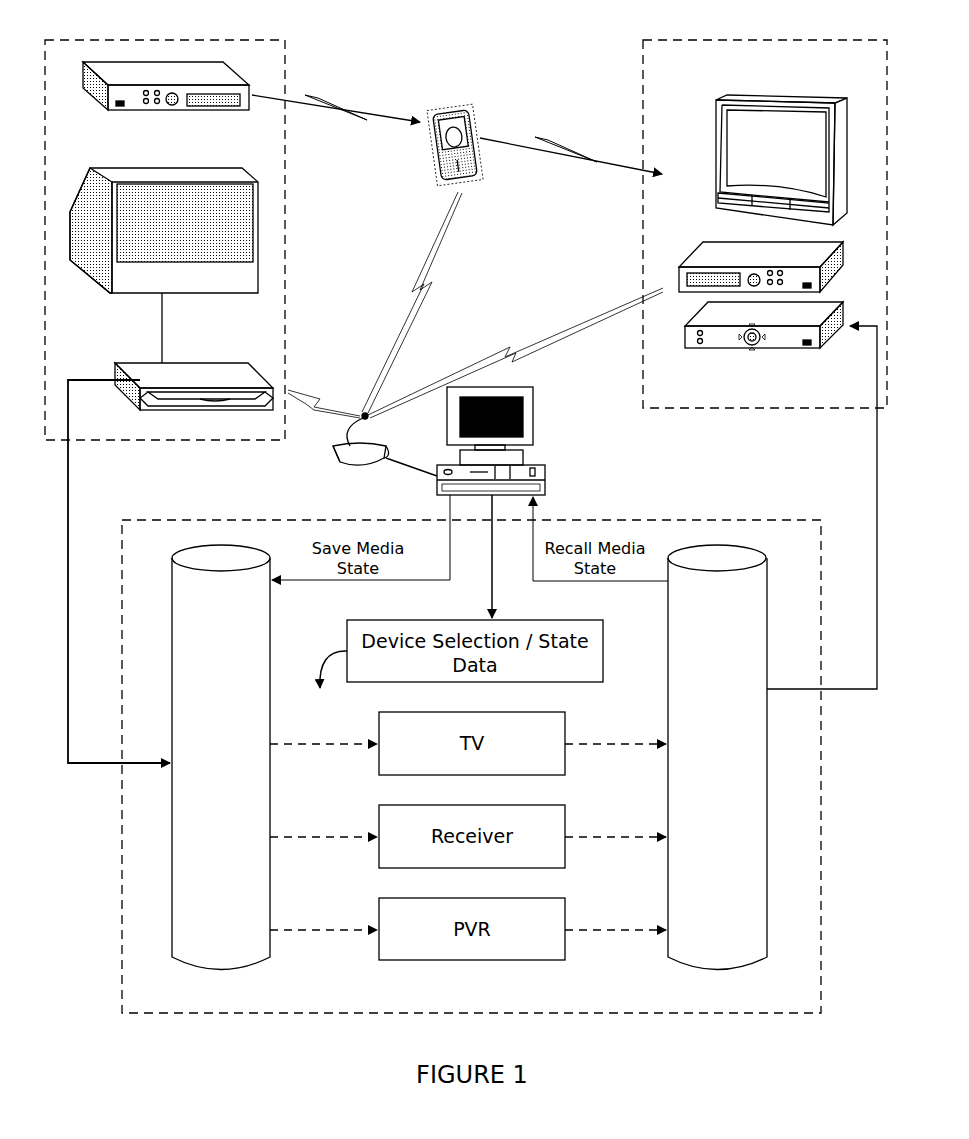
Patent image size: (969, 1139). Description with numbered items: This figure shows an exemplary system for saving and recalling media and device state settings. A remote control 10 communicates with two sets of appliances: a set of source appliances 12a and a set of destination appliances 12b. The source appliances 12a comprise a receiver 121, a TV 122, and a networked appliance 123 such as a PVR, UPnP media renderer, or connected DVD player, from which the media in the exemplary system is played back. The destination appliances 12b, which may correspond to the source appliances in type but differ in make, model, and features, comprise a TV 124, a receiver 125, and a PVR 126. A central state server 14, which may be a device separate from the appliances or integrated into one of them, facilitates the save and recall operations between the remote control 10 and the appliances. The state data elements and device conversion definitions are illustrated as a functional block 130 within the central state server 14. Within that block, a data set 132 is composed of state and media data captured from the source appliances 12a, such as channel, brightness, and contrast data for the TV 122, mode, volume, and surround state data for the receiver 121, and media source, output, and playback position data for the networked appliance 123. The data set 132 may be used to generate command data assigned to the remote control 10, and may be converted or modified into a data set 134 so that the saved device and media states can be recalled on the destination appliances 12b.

The set of source appliances 12a is at (207, 39).
The set of destination appliances 12b is at (828, 38).
The receiver 121 is at (90, 82).
The TV 122 is at (230, 297).
The networked appliance 123 is at (150, 412).
The TV 124 is at (717, 102).
The receiver 125 is at (878, 272).
The PVR 126 is at (753, 348).
The remote control 10 is at (482, 160).
The central state server 14 is at (525, 410).
The functional block 130 is at (762, 1015).
The data set 132 is at (221, 757).
The data set 134 is at (717, 757).